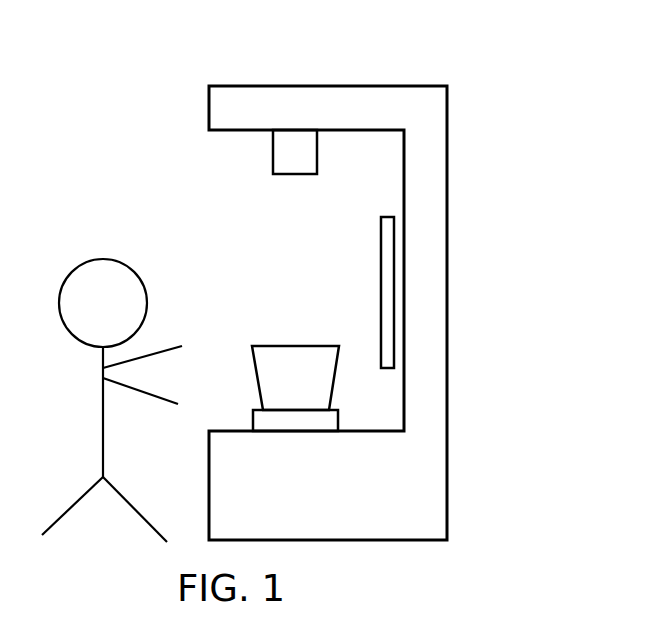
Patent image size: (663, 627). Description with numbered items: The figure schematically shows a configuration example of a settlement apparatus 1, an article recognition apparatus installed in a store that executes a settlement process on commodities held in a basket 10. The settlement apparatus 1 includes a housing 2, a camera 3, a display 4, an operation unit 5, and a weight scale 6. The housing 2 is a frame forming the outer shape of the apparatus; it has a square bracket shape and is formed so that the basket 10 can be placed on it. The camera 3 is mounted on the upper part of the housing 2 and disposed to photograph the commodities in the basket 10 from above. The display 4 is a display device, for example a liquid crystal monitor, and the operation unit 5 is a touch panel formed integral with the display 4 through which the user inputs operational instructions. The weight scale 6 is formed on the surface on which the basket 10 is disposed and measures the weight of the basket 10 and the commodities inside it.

The settlement apparatus 1 is at (342, 67).
The housing 2 is at (448, 128).
The camera 3 is at (296, 175).
The display 4 is at (357, 292).
The operation unit 5 is at (381, 249).
The weight scale 6 is at (253, 420).
The basket 10 is at (295, 346).